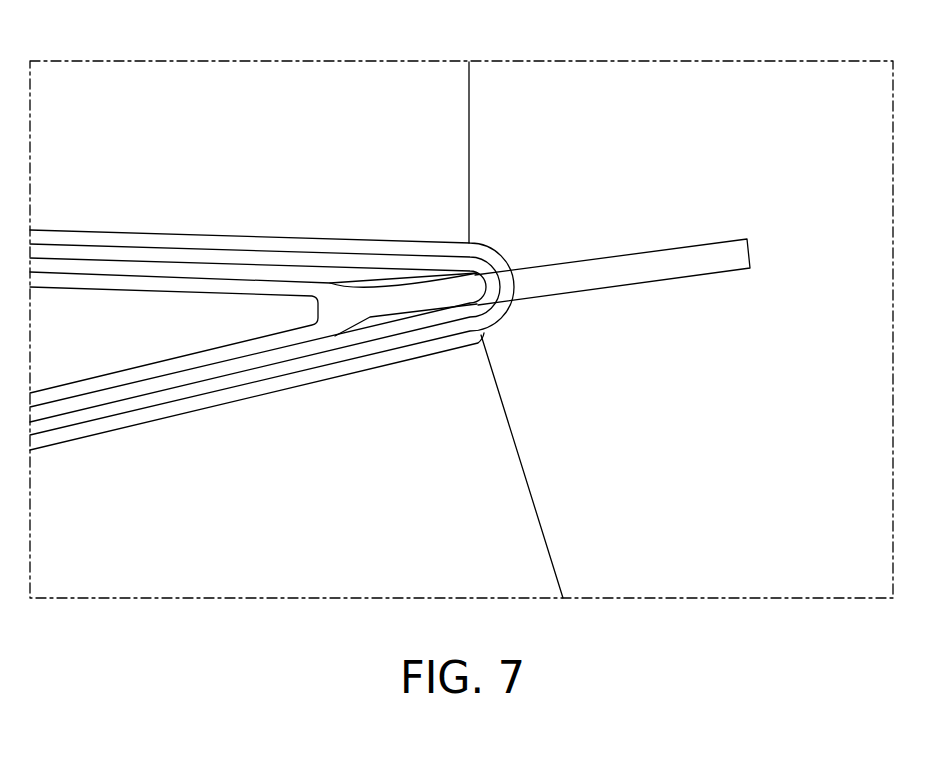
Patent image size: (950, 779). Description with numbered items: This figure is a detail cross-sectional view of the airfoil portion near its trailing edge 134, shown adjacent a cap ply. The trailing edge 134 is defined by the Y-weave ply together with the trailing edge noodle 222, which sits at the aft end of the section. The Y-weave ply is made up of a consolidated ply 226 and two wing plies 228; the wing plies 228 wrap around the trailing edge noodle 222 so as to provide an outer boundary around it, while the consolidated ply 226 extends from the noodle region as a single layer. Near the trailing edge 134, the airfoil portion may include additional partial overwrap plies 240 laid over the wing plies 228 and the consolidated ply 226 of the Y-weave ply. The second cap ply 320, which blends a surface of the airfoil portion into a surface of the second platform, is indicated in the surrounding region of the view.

The trailing edge 134 is at (510, 300).
The trailing edge noodle 222 is at (283, 310).
The consolidated ply 226 is at (707, 257).
The wing plies 228 is at (205, 285).
The partial overwrap plies 240 is at (400, 262).
The second cap ply 320 is at (648, 136).